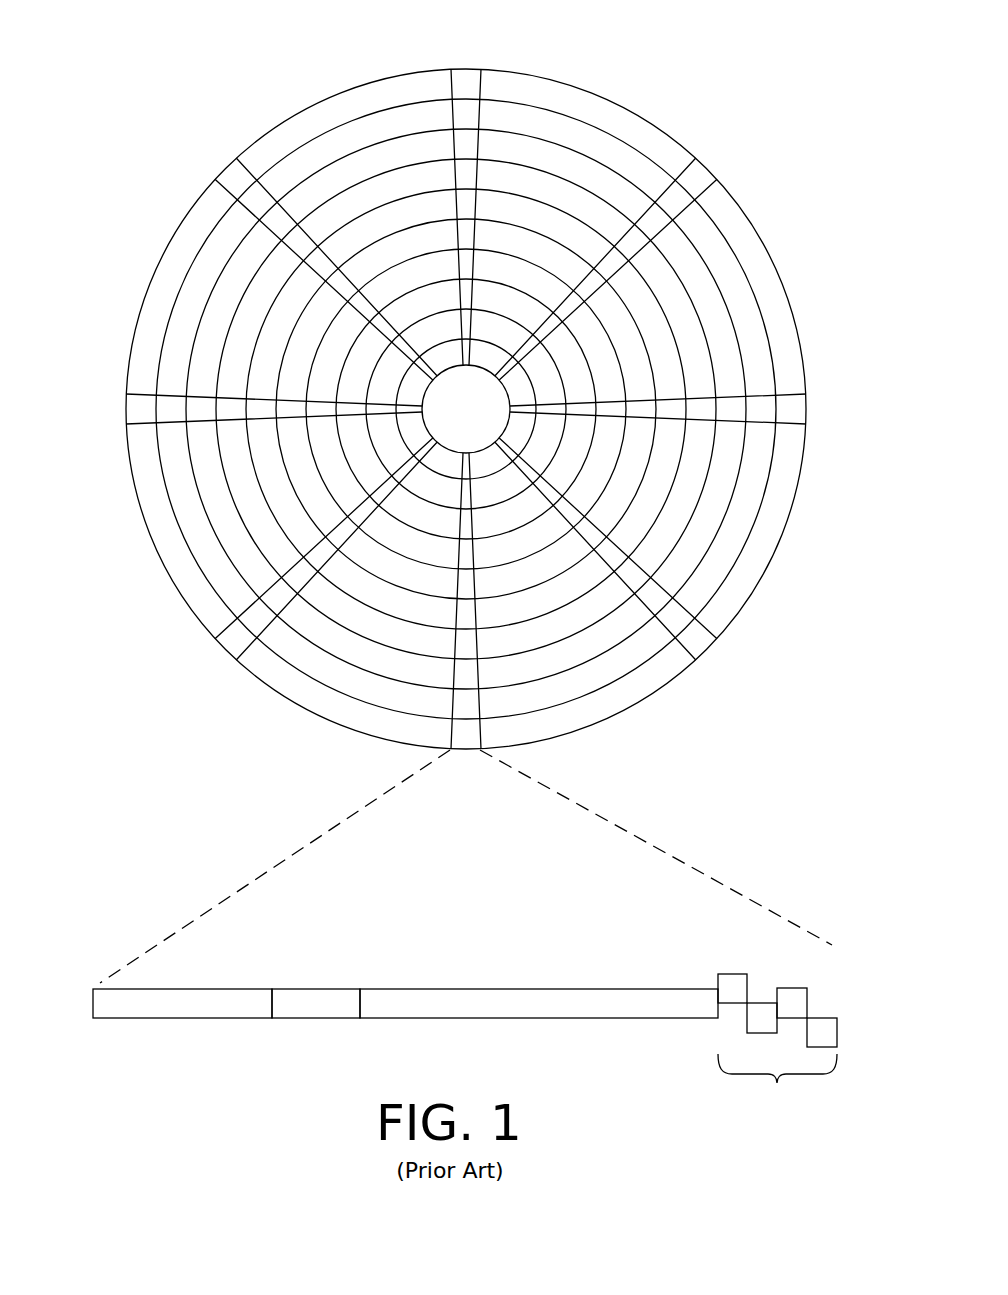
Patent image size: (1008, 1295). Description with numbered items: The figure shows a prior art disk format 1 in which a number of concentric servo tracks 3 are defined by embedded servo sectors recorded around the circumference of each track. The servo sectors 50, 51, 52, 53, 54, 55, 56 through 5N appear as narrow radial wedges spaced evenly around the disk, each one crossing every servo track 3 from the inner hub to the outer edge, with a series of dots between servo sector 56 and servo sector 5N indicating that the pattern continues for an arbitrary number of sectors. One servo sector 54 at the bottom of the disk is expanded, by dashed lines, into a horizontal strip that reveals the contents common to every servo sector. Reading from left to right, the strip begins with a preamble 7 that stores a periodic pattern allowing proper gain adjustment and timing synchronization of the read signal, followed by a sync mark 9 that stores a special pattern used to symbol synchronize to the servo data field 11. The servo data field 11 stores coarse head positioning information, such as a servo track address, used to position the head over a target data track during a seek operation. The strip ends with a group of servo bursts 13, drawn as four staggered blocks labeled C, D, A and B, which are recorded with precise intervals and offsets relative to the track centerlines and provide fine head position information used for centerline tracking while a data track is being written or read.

The disk format 1 is at (208, 68).
The servo track 3 is at (582, 138).
The servo sector 50 is at (465, 78).
The servo sector 51 is at (698, 178).
The servo sector 52 is at (798, 412).
The servo sector 53 is at (697, 657).
The servo sector 54 is at (308, 824).
The servo sector 55 is at (228, 647).
The servo sector 56 is at (130, 410).
The servo sector 5N is at (232, 168).
The preamble 7 is at (161, 1018).
The sync mark 9 is at (313, 1018).
The servo data field 11 is at (524, 1018).
The servo bursts 13 is at (698, 950).